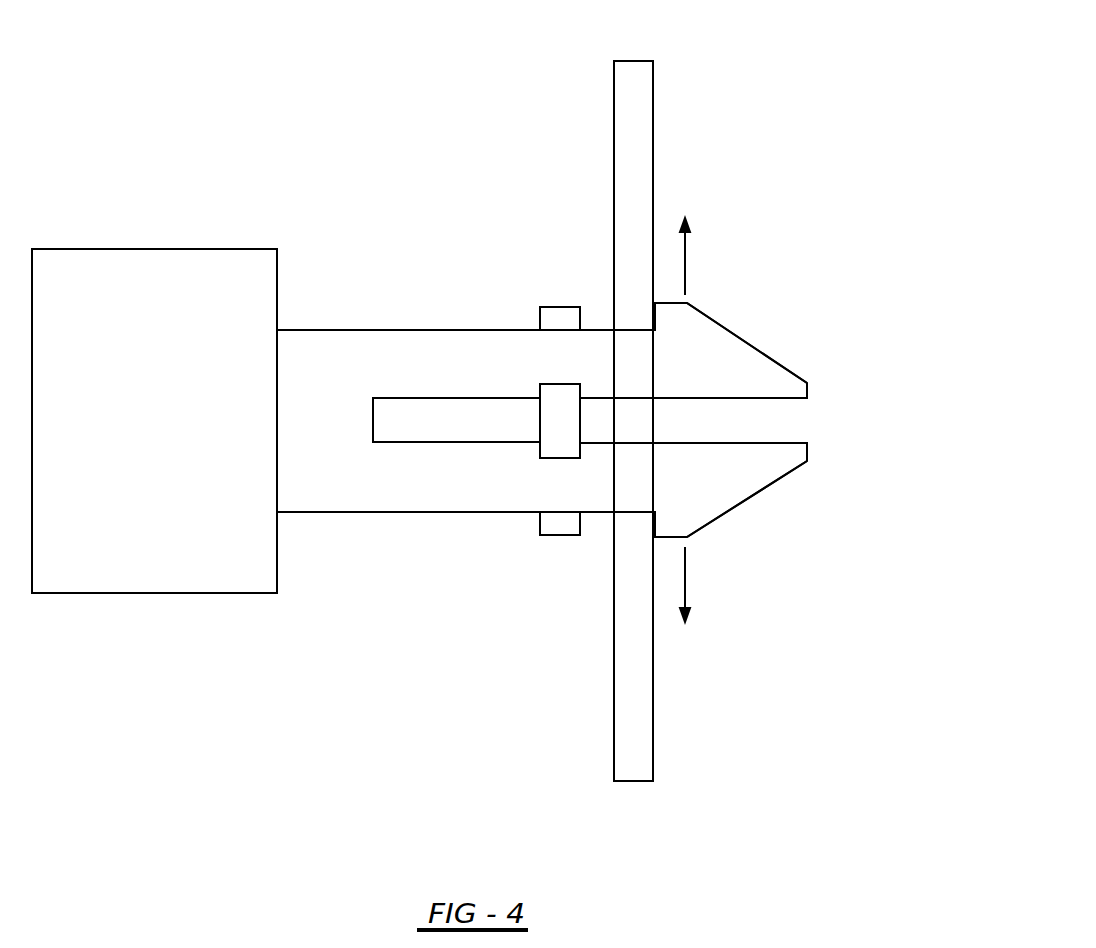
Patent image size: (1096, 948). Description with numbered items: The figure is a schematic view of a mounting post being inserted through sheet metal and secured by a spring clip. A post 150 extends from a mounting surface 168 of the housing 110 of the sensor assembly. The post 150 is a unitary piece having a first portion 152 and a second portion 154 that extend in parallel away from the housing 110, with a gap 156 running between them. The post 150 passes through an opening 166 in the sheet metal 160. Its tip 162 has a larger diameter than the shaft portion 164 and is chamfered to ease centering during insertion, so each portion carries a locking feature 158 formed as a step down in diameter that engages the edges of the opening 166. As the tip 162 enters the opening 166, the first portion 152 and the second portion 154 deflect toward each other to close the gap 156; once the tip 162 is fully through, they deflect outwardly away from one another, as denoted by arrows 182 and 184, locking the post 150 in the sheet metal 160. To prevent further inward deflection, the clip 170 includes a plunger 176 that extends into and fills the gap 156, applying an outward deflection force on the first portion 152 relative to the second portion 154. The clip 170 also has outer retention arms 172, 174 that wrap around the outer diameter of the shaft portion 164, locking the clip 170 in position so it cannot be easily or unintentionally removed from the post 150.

The housing 110 is at (187, 275).
The post 150 is at (362, 352).
The first portion 152 is at (727, 345).
The second portion 154 is at (712, 493).
The gap 156 is at (777, 418).
The locking feature 158 is at (632, 303).
The sheet metal 160 is at (643, 85).
The tip 162 is at (762, 459).
The shaft portion 164 is at (313, 352).
The opening 166 is at (657, 532).
The mounting surface 168 is at (277, 554).
The clip 170 is at (551, 288).
The outer retention arm 172 is at (548, 320).
The outer retention arm 174 is at (545, 529).
The plunger 176 is at (552, 421).
The arrow 182 is at (685, 259).
The arrow 184 is at (685, 590).